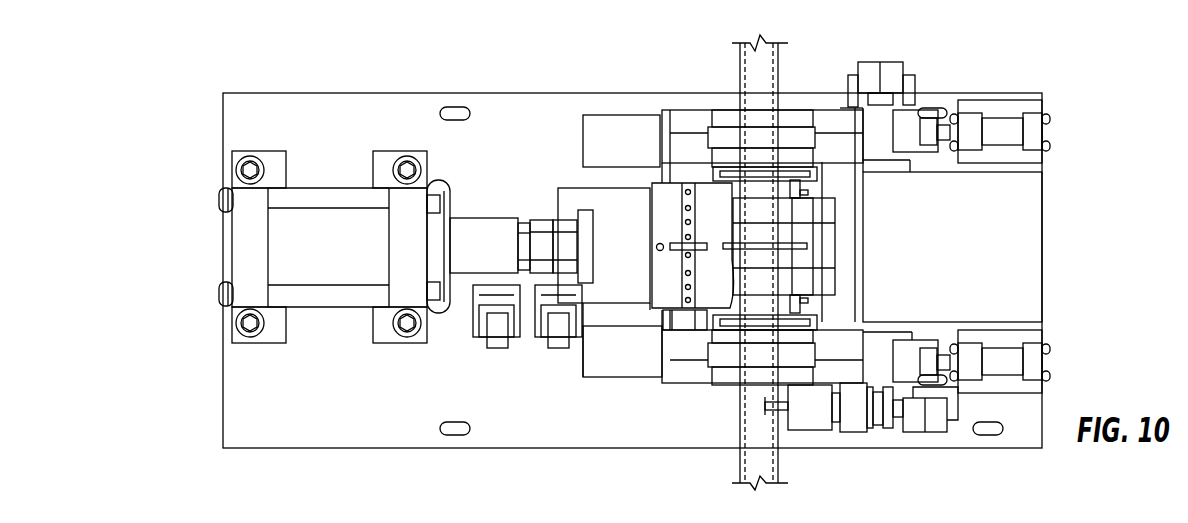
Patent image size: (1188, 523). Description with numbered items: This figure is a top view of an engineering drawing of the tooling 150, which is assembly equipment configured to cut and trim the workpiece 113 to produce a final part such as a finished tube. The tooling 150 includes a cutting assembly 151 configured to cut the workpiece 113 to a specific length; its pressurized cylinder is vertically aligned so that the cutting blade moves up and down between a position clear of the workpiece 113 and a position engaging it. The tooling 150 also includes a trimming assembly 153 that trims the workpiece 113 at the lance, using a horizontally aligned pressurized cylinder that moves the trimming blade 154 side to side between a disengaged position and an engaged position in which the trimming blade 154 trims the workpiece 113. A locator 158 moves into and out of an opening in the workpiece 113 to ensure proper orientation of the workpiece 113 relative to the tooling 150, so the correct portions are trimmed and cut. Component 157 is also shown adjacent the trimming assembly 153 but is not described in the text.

The workpiece 113 is at (737, 76).
The tooling 150 is at (200, 197).
The cutting assembly 151 is at (843, 218).
The trimming assembly 153 is at (627, 312).
The trimming blade 154 is at (692, 300).
The coupling 157 is at (544, 242).
The locator 158 is at (825, 435).